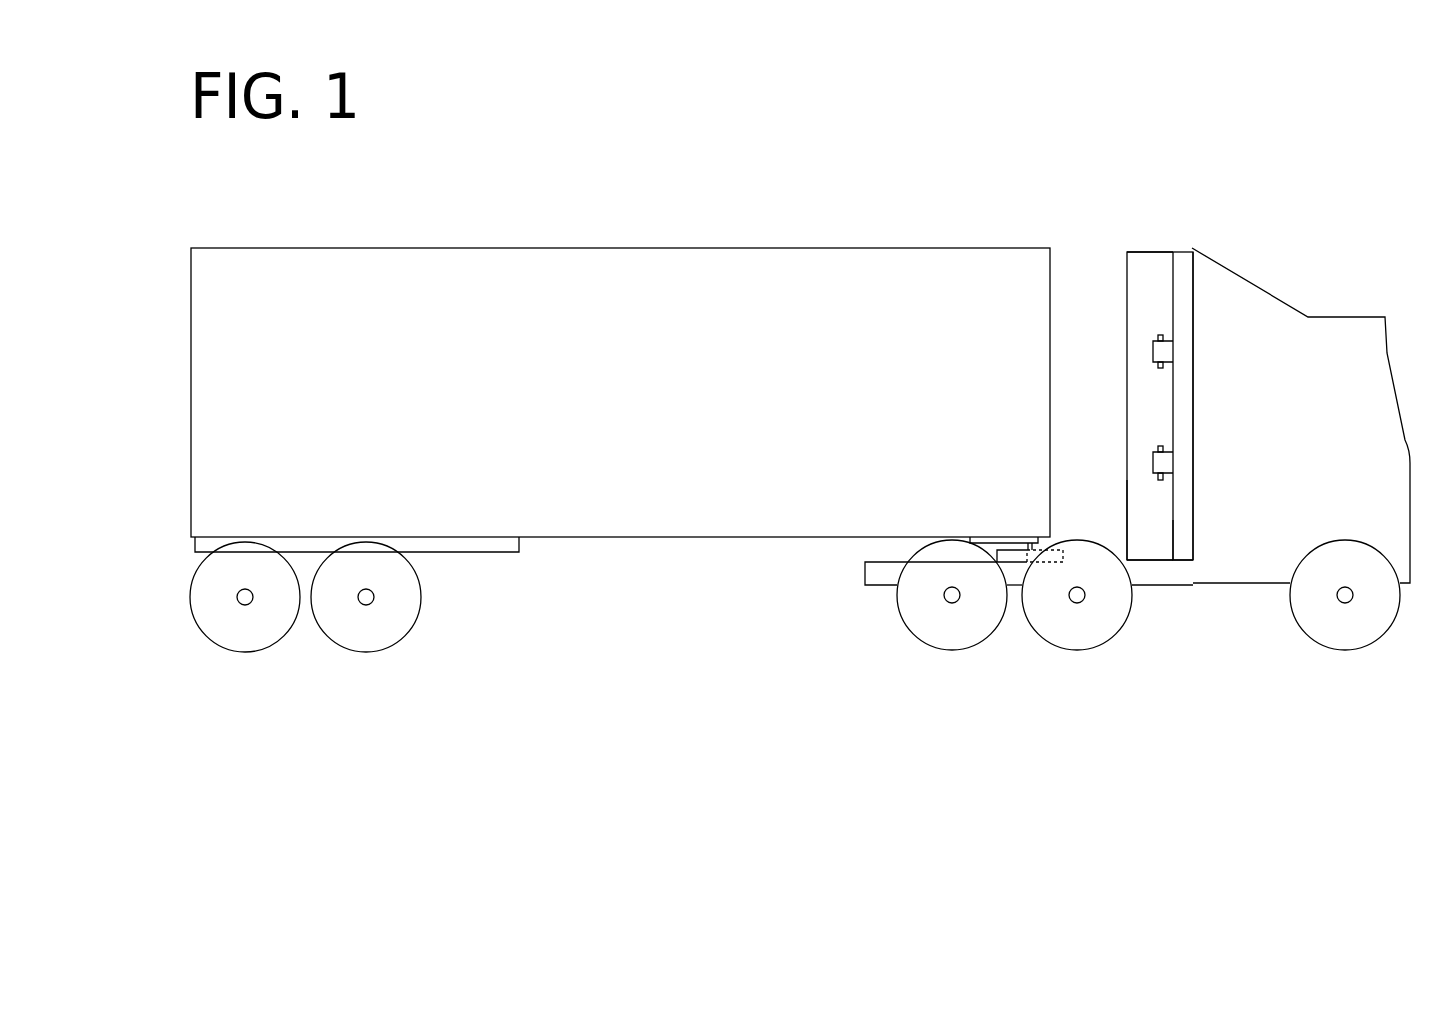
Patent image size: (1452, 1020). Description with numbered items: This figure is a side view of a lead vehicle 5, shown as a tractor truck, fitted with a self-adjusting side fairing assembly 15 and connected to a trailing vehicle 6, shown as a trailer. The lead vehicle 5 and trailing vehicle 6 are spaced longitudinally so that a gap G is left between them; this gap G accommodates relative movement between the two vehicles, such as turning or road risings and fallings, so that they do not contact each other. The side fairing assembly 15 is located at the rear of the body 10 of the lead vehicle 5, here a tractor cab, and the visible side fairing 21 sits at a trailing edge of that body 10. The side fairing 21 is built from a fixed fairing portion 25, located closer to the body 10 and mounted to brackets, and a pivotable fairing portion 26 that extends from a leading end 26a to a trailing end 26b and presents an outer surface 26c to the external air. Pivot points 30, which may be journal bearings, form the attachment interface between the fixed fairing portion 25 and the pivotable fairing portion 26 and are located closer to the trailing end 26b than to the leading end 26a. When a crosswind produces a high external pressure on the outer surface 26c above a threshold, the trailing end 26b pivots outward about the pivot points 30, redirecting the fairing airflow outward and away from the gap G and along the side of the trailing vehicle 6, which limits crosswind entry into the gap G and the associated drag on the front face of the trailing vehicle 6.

The lead vehicle 5 is at (1307, 342).
The trailing vehicle 6 is at (827, 295).
The body 10 is at (1202, 418).
The self-adjusting side fairing assembly 15 is at (1155, 243).
The second side fairing 21 is at (1172, 342).
The fixed fairing portion 25 is at (1185, 495).
The pivotable fairing portion 26 is at (1153, 519).
The leading end 26a is at (1173, 542).
The trailing end 26b is at (1128, 519).
The outer surface 26c is at (1145, 295).
The pivot points 30 is at (1156, 448).
The gap G is at (1077, 277).